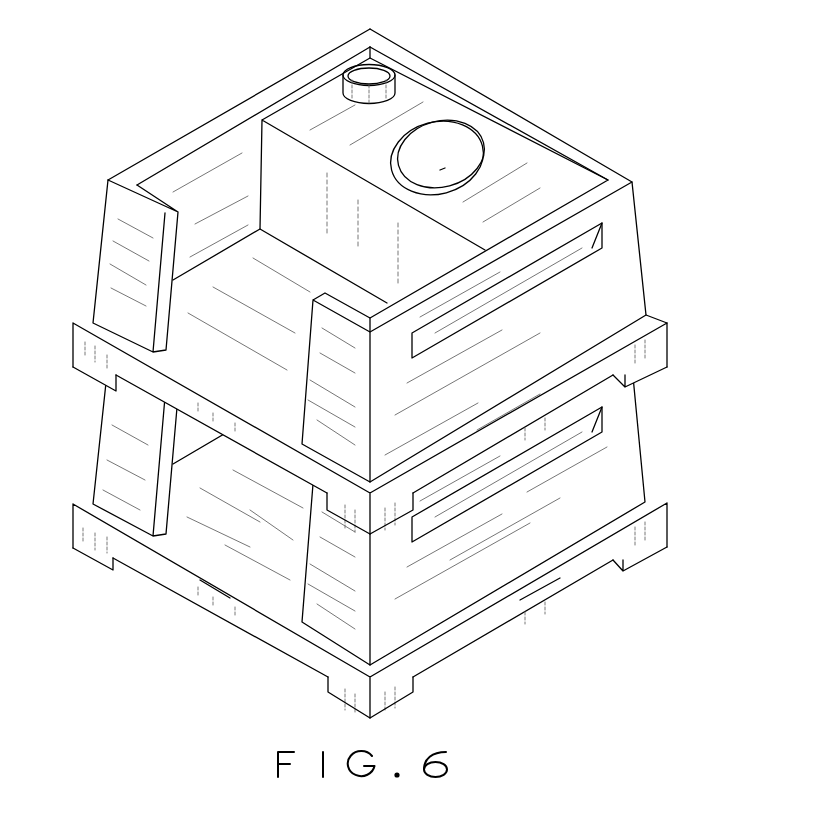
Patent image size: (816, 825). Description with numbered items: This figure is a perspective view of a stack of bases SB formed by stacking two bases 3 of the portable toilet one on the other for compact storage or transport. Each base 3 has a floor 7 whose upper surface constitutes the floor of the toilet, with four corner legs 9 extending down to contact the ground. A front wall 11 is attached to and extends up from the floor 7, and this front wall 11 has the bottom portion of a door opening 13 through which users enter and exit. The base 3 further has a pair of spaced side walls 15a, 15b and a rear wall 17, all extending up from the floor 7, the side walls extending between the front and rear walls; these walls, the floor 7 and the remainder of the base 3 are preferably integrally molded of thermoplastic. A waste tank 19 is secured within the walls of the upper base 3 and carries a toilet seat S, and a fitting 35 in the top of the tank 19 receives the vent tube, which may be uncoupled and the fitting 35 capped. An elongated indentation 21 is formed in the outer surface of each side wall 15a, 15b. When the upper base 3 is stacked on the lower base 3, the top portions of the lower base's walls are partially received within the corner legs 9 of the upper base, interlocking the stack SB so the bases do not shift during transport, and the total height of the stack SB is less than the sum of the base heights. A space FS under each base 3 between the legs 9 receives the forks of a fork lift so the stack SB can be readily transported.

The base 3 is at (650, 183).
The floor 7 is at (242, 356).
The corner legs 9 is at (654, 362).
The front wall 11 is at (129, 266).
The door opening 13 is at (164, 320).
The side wall 15a is at (571, 214).
The side wall 15b is at (208, 133).
The rear wall 17 is at (481, 98).
The waste tank 19 is at (468, 157).
The indentation 21 is at (577, 257).
The fitting 35 is at (346, 68).
The toilet seat S is at (427, 124).
The stack of bases SB is at (82, 452).
The space FS is at (230, 627).